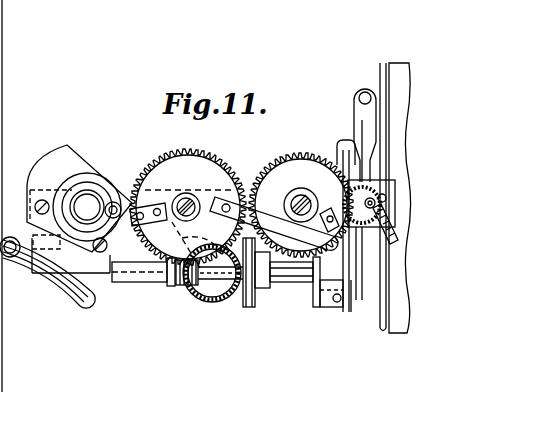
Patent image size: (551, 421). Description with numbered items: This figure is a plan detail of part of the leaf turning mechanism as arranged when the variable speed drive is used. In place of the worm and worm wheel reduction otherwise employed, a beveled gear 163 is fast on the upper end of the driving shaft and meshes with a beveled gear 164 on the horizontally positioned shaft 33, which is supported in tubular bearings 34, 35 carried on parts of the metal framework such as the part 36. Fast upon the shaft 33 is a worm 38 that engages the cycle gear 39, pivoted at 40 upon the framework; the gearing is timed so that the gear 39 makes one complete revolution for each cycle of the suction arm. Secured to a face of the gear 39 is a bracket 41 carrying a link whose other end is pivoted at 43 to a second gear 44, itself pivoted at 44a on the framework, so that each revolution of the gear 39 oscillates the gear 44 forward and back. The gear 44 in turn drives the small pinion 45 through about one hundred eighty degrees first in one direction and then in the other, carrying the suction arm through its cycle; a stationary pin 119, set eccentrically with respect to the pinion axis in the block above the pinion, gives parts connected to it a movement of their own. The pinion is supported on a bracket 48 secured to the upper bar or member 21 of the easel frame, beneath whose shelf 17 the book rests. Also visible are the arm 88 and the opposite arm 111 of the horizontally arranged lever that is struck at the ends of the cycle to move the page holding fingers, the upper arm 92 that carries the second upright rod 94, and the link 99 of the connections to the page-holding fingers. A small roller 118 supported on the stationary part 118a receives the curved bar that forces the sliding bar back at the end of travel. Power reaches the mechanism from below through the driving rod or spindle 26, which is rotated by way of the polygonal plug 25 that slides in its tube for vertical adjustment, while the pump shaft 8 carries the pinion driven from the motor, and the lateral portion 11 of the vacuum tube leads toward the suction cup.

The driving rod or spindle 26 is at (3, 77).
The framework part 36 is at (35, 273).
The pump shaft 8 is at (113, 202).
The cycle gear 39 is at (152, 160).
The pivot 40 is at (185, 194).
The bracket 41 is at (215, 198).
The second gear 44 is at (270, 161).
The pivot 44a is at (309, 185).
The pivot 43 is at (326, 212).
The small pinion 45 is at (340, 150).
The second upright rod 94 is at (365, 92).
The link 99 is at (356, 114).
The lever arm 88 is at (358, 140).
The upper arm 92 is at (352, 126).
The upper bar or member 21 is at (392, 63).
The bottom shelf 17 is at (396, 331).
The bracket 48 is at (397, 266).
The stationary pin 119 is at (365, 233).
The tubular bearing 34 is at (131, 283).
The worm 38 is at (178, 285).
The shaft 33 is at (201, 297).
The beveled gear 163 is at (217, 300).
The beveled gear 164 is at (251, 306).
The tubular bearing 35 is at (298, 283).
The small roller 118 is at (342, 308).
The stationary part 118a is at (330, 312).
The opposite lever arm 111 is at (351, 310).
The vacuum tube lateral portion 11 is at (70, 300).
The plug 25 is at (3, 298).